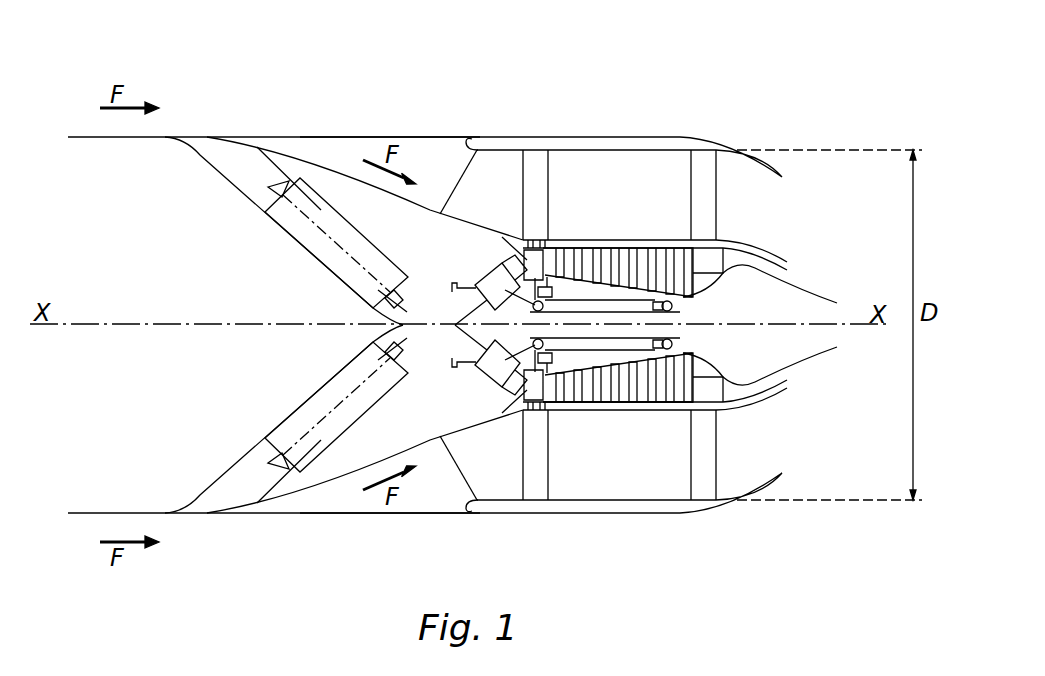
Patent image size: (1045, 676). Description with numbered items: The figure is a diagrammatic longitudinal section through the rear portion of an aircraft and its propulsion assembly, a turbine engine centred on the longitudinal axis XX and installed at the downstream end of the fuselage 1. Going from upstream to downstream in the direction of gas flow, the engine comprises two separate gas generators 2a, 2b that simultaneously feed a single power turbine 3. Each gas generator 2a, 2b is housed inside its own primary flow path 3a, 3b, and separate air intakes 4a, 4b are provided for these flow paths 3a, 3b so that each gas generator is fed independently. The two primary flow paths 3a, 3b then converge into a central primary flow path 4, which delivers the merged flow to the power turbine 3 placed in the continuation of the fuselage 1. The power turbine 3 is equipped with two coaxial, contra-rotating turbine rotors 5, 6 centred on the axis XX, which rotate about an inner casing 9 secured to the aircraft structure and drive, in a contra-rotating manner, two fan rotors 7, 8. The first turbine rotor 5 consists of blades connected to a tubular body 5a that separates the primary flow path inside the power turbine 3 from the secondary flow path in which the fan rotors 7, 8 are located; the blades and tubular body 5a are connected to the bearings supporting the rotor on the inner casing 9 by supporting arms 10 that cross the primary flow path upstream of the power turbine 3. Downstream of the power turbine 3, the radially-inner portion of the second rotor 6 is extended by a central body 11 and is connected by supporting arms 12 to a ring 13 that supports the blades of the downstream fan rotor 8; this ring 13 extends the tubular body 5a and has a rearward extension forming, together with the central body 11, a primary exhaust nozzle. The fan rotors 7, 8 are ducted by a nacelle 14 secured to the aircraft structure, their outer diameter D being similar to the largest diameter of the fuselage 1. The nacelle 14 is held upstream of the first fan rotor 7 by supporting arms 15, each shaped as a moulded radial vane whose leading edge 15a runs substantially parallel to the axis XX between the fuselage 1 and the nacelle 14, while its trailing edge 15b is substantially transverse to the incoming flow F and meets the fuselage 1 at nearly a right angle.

The fuselage 1 is at (84, 136).
The gas generator 2a is at (322, 205).
The gas generator 2b is at (322, 445).
The power turbine 3 is at (643, 417).
The primary flow path 3a is at (266, 187).
The primary flow path 3b is at (266, 463).
The central primary flow path 4 is at (438, 160).
The air intake 4a is at (193, 147).
The air intake 4b is at (193, 503).
The first turbine rotor 5 is at (567, 267).
The tubular body 5a is at (600, 246).
The second turbine rotor 6 is at (657, 270).
The fan rotor 7 is at (533, 187).
The fan rotor 8 is at (705, 177).
The inner casing 9 is at (668, 318).
The supporting arms 10 is at (533, 267).
The central body 11 is at (812, 288).
The supporting arms 12 is at (788, 268).
The ring 13 is at (722, 243).
The nacelle 14 is at (617, 143).
The supporting arms 15 is at (436, 303).
The leading edge 15a is at (328, 137).
The trailing edge 15b is at (477, 147).